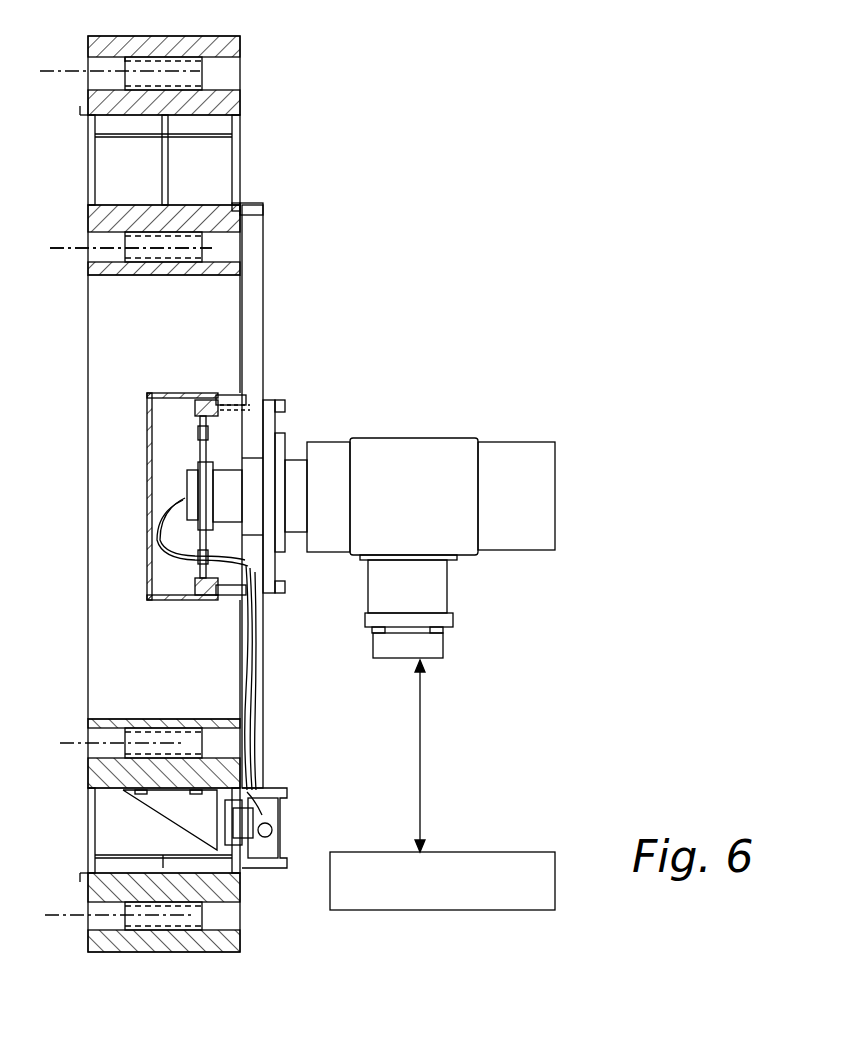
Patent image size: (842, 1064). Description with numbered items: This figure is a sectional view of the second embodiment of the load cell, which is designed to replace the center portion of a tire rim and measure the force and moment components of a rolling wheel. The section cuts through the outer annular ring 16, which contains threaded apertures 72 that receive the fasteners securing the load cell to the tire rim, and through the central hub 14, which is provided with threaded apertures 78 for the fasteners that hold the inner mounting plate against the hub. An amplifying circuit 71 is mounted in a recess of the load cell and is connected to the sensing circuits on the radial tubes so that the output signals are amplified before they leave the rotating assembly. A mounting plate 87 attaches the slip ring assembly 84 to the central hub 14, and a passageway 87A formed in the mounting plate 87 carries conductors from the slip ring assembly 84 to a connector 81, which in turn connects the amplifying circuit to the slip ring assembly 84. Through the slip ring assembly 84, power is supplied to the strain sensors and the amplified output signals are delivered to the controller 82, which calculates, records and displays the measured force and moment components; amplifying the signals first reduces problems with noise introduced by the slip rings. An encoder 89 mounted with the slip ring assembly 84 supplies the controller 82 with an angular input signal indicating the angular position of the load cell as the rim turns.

The central hub 14 is at (88, 222).
The annular ring 16 is at (98, 36).
The threaded apertures 72 is at (192, 64).
The amplifying circuit 71 is at (168, 163).
The threaded apertures 78 is at (130, 262).
The mounting plate 87 is at (264, 298).
The passageway 87A is at (250, 630).
The slip ring assembly 84 is at (385, 438).
The encoder 89 is at (503, 442).
The connector 81 is at (275, 818).
The controller 82 is at (512, 852).